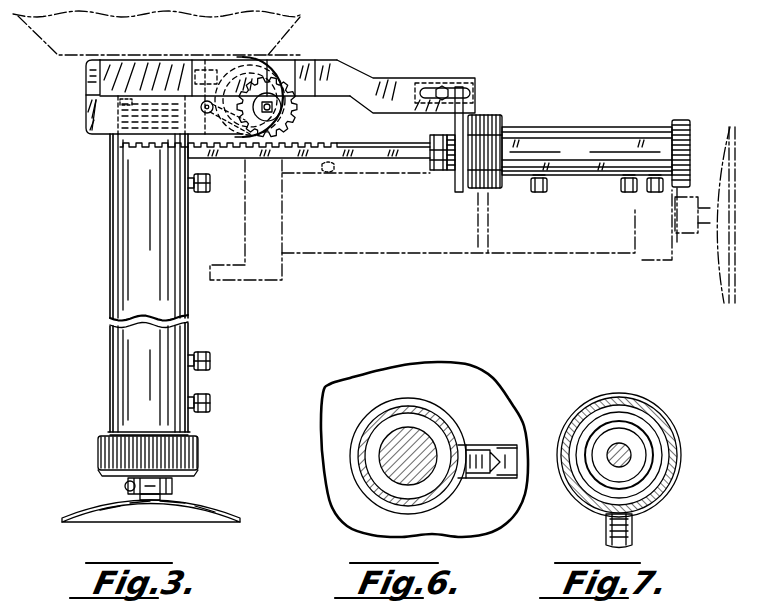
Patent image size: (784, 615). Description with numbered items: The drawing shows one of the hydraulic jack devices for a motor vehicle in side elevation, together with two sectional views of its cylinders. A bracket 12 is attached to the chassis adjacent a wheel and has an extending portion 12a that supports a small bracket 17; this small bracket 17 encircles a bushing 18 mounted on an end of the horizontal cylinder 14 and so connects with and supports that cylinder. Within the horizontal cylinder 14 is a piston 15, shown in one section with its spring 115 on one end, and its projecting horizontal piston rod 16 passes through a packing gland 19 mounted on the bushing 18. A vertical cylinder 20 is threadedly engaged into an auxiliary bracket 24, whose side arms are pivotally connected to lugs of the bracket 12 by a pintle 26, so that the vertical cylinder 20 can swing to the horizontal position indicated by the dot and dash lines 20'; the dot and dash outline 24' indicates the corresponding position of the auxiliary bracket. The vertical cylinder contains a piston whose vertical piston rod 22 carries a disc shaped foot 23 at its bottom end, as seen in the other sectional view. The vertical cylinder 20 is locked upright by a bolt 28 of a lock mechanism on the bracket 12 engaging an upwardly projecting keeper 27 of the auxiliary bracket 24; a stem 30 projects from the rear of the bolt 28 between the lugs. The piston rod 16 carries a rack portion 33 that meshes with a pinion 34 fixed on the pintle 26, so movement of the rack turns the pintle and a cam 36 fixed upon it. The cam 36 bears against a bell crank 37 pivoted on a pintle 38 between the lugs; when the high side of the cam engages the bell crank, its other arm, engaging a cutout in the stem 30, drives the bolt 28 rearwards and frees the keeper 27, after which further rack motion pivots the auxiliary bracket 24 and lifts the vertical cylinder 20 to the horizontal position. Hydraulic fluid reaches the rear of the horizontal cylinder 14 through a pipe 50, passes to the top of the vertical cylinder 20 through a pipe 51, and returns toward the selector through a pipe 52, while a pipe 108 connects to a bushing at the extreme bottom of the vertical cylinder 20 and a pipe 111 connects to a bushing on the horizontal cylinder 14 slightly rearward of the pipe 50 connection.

In FIG. 3, the bracket 12 is at (120, 100).
In FIG. 3, the extending portion 12a is at (340, 76).
In FIG. 3, the horizontal cylinder 14 is at (563, 140).
In FIG. 7, the horizontal cylinder 14 is at (585, 415).
In FIG. 7, the piston 15 is at (624, 400).
In FIG. 3, the piston rod 16 is at (360, 148).
In FIG. 7, the piston rod 16 is at (640, 430).
In FIG. 3, the small bracket 17 is at (458, 192).
In FIG. 3, the bushing 18 is at (452, 142).
In FIG. 3, the packing gland 19 is at (436, 170).
In FIG. 3, the vertical cylinder 20 is at (135, 317).
In FIG. 6, the vertical cylinder 20 is at (408, 444).
In FIG. 3, the horizontal position of vertical cylinder 20' is at (479, 225).
In FIG. 6, the vertical piston rod 22 is at (410, 440).
In FIG. 3, the disc shaped foot 23 is at (195, 500).
In FIG. 6, the disc shaped foot 23 is at (333, 398).
In FIG. 3, the auxiliary bracket 24 is at (72, 118).
In FIG. 3, the alternate housing position 24' is at (251, 235).
In FIG. 3, the pintle 26 is at (270, 100).
In FIG. 3, the keeper 27 is at (89, 65).
In FIG. 3, the bolt 28 is at (86, 84).
In FIG. 3, the stem 30 is at (262, 58).
In FIG. 3, the rack portion 33 is at (300, 143).
In FIG. 3, the pinion 34 is at (298, 109).
In FIG. 3, the cam 36 is at (300, 85).
In FIG. 3, the bell crank 37 is at (205, 68).
In FIG. 3, the pintle 38 is at (185, 152).
In FIG. 3, the pipe 50 is at (622, 190).
In FIG. 3, the pipe 51 is at (202, 194).
In FIG. 7, the pipe 51 is at (633, 532).
In FIG. 3, the pipe 52 is at (205, 352).
In FIG. 6, the pipe 52 is at (500, 447).
In FIG. 3, the pipe 108 is at (208, 400).
In FIG. 3, the pipe 111 is at (650, 194).
In FIG. 7, the spring 115 is at (645, 455).